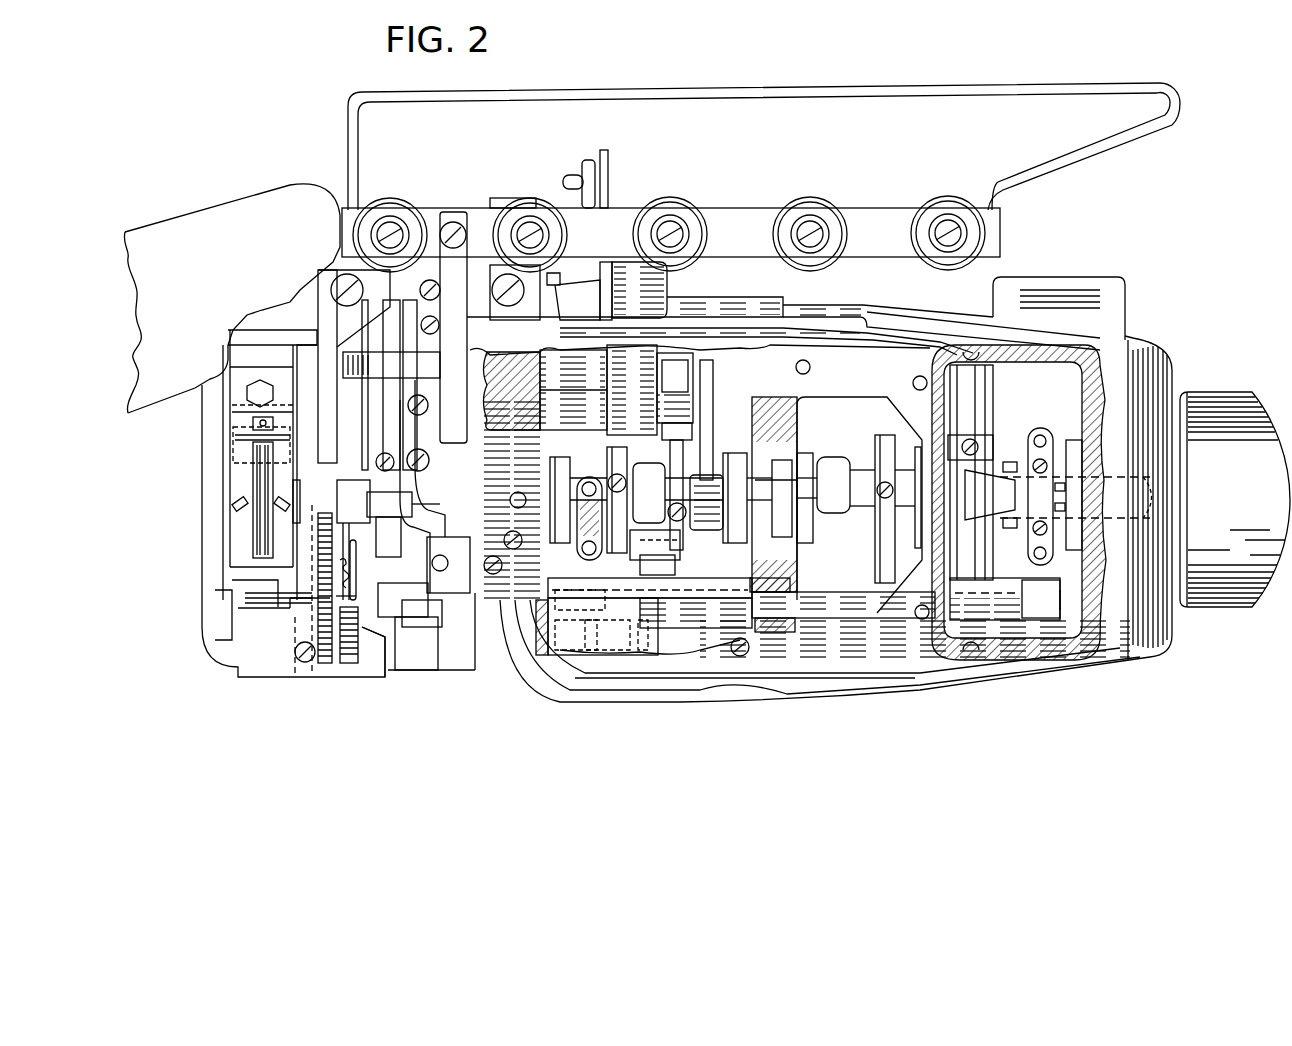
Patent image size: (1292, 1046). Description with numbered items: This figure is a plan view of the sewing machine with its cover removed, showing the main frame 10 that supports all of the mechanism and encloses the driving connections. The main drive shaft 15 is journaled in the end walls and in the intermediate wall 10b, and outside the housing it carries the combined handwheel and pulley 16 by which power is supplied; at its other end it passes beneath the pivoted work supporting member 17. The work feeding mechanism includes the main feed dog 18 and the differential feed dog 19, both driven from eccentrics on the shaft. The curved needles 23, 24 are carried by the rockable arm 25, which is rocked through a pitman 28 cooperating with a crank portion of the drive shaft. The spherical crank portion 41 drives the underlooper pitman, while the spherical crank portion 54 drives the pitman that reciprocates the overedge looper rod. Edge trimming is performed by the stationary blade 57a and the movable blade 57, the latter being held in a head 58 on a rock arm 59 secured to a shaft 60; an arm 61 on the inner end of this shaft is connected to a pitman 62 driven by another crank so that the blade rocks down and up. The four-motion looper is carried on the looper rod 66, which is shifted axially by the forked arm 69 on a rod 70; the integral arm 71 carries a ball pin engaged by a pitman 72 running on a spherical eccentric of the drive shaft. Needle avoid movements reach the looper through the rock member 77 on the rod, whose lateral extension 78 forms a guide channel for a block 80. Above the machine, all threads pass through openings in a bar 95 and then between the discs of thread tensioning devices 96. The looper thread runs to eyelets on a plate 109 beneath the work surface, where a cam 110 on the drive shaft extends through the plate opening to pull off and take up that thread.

The main frame 10 is at (1100, 658).
The intermediate wall 10b is at (786, 438).
The main drive shaft 15 is at (1113, 475).
The combined handwheel and pulley 16 is at (1196, 400).
The work supporting member 17 is at (199, 222).
The main feed dog 18 is at (325, 568).
The differential feed dog 19 is at (350, 658).
The curved needle 23 is at (355, 575).
The curved needle 24 is at (343, 597).
The rockable member or arm 25 is at (358, 490).
The pitman 28 is at (580, 538).
The spherical crank portion 41 is at (835, 462).
The spherical crank portion 54 is at (660, 504).
The movable blade 57 is at (433, 618).
The stationary blade 57a is at (374, 652).
The head 58 is at (425, 636).
The rock arm 59 is at (412, 540).
The shaft 60 is at (585, 396).
The arm 61 is at (650, 392).
The pitman 62 is at (708, 438).
The looper rod 66 is at (812, 600).
The forked arm 69 is at (1014, 614).
The rod or shaft 70 is at (975, 405).
The arm 71 is at (1000, 510).
The pitman 72 is at (1052, 510).
The rock member 77 is at (710, 588).
The lateral extension 78 is at (655, 637).
The block 80 is at (620, 636).
The bar 95 is at (690, 96).
The thread tensioning device 96 is at (402, 212).
The plate 109 is at (238, 552).
The cam 110 is at (257, 537).